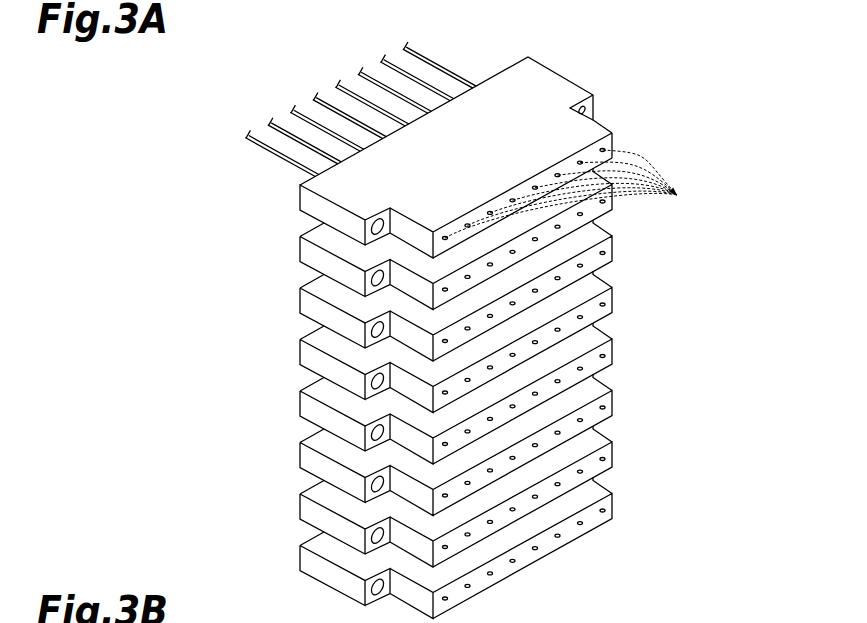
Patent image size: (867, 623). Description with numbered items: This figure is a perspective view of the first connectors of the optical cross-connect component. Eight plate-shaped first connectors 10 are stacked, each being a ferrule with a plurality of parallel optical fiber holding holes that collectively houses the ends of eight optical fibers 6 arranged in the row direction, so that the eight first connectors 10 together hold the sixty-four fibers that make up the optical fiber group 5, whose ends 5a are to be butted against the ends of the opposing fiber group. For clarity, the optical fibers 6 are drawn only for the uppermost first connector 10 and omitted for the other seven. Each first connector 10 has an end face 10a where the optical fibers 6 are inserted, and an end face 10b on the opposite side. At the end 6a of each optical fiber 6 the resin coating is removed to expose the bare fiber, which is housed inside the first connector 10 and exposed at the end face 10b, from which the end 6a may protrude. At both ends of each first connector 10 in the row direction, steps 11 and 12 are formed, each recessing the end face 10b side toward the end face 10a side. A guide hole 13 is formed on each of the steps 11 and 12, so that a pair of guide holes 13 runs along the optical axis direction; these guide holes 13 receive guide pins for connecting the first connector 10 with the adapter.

The optical fiber group 5 is at (360, 90).
The ends 5a is at (594, 194).
The optical fiber 6 is at (426, 47).
The end 6a is at (594, 194).
The first connector 10 is at (553, 71).
The end face 10a is at (300, 193).
The end face 10b is at (614, 148).
The step 11 is at (594, 100).
The step 12 is at (373, 237).
The guide hole 13 is at (600, 117).